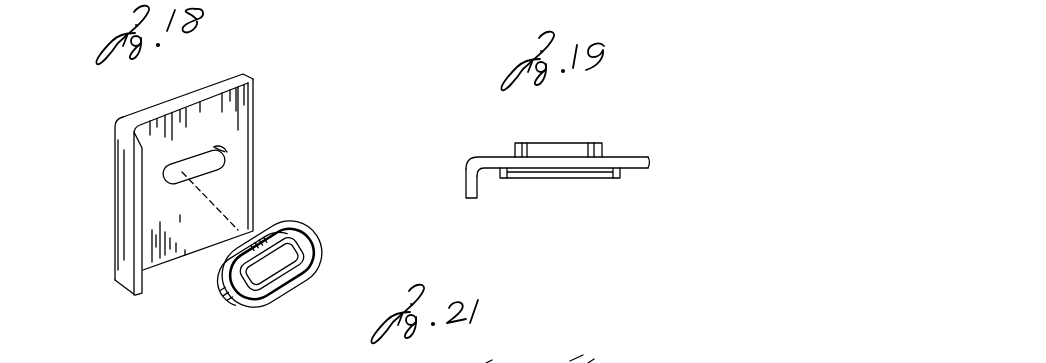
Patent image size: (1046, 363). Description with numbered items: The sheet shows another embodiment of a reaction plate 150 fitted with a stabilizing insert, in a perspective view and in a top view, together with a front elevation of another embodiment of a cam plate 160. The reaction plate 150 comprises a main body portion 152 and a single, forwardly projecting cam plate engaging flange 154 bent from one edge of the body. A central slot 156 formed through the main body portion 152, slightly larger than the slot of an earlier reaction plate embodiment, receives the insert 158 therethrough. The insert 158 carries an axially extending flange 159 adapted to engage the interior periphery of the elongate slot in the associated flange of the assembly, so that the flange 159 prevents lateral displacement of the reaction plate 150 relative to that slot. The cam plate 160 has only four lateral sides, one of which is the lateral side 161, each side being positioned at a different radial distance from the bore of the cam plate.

In FIG. 18, the reaction plate 150 is at (220, 174).
In FIG. 19, the reaction plate 150 is at (602, 168).
In FIG. 18, the main body portion 152 is at (188, 249).
In FIG. 19, the main body portion 152 is at (626, 162).
In FIG. 18, the cam plate engaging flange 154 is at (125, 261).
In FIG. 19, the cam plate engaging flange 154 is at (473, 200).
In FIG. 18, the central slot 156 is at (200, 184).
In FIG. 18, the insert 158 is at (319, 251).
In FIG. 19, the insert 158 is at (547, 179).
In FIG. 18, the axially extending flange 159 is at (278, 221).
In FIG. 19, the axially extending flange 159 is at (602, 150).
In FIG. 21, the cam plate 160 is at (590, 362).
In FIG. 21, the lateral side 161 is at (490, 362).